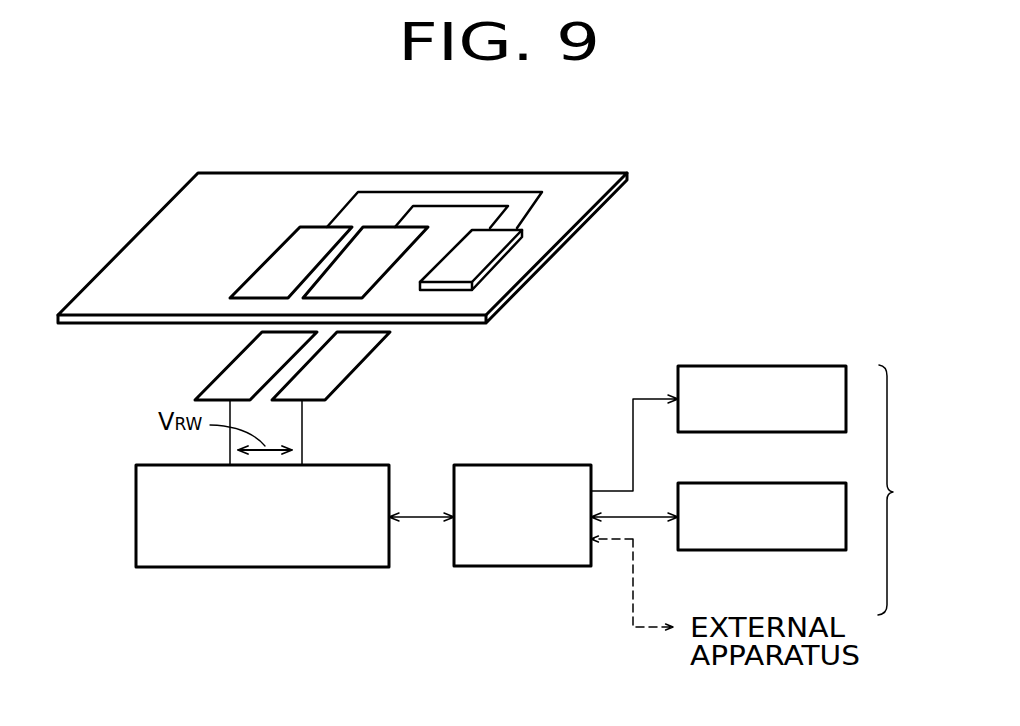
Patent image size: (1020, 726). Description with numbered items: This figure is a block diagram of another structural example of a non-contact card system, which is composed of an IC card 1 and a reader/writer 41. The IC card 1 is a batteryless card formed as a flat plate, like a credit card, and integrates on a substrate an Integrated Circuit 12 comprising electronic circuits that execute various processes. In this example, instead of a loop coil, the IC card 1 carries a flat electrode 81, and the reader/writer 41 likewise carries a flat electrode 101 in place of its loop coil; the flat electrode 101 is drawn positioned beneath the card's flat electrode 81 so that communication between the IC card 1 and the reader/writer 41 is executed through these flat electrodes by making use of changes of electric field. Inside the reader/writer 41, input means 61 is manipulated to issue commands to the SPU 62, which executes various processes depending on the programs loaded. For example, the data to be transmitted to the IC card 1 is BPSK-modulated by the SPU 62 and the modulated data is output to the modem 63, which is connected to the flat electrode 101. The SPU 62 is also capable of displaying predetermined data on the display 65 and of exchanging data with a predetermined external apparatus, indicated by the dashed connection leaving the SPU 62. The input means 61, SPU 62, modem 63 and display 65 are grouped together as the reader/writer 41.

The IC card 1 is at (578, 172).
The flat electrode 81 is at (380, 227).
The Integrated Circuit (IC) 12 is at (500, 265).
The flat electrode 101 is at (247, 402).
The modem 63 is at (288, 568).
The SPU 62 is at (553, 567).
The display 65 is at (808, 366).
The input means 61 is at (808, 483).
The reader/writer (R/W) 41 is at (905, 490).